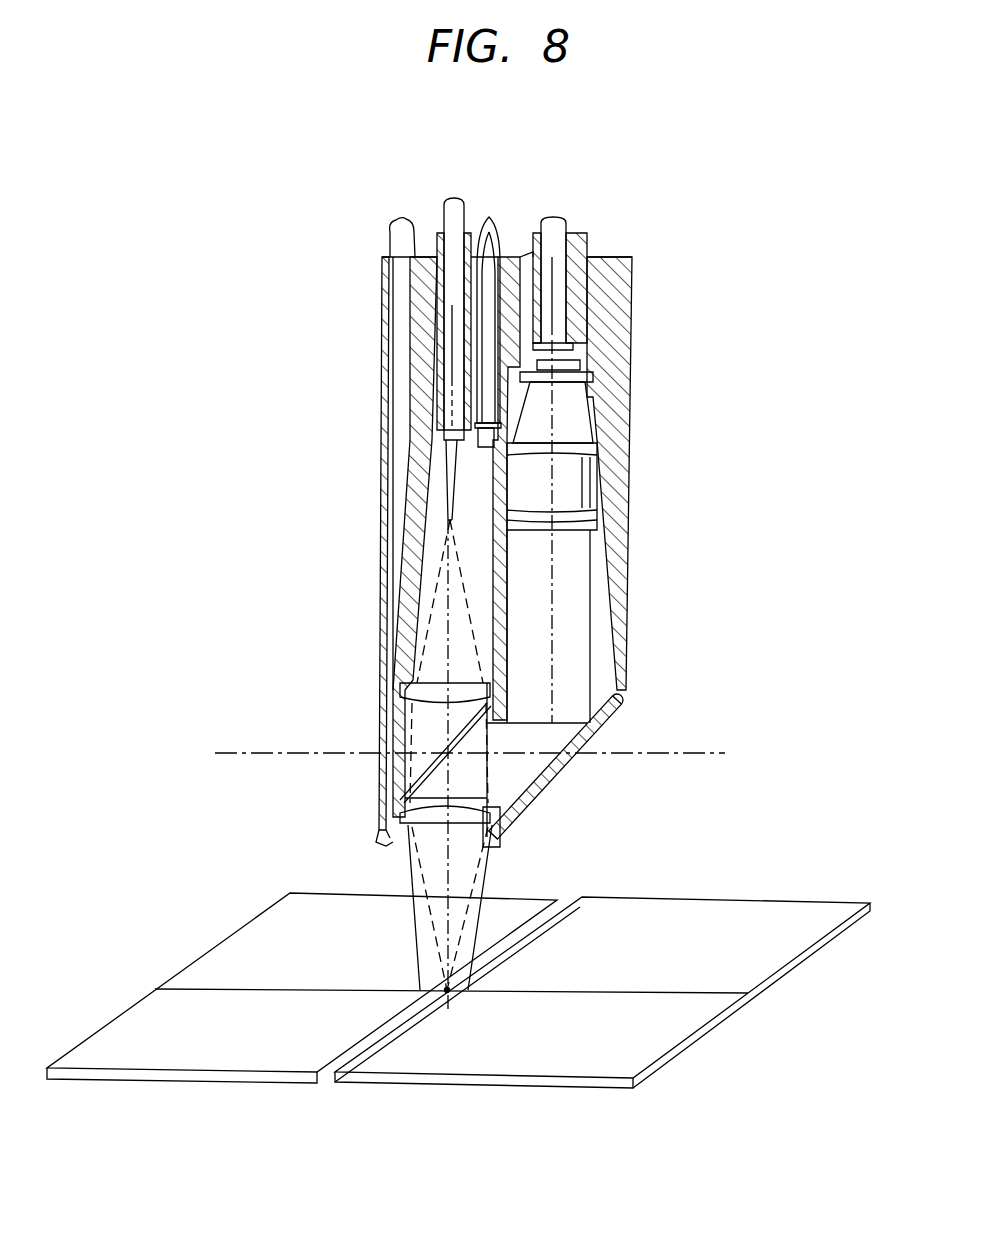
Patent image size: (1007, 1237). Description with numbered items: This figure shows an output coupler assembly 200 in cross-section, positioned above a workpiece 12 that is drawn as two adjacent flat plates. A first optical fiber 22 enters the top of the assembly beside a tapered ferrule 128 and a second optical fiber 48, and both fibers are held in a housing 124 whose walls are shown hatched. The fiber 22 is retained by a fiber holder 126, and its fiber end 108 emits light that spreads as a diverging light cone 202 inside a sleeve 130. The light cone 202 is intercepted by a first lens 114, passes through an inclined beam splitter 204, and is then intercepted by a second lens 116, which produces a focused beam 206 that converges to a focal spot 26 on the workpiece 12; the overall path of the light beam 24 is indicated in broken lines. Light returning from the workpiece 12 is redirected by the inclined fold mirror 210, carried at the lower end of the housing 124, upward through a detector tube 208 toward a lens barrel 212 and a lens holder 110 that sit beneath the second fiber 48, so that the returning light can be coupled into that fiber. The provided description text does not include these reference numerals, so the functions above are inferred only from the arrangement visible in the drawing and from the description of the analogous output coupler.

The scanning head assembly 200 is at (703, 173).
The target surface / workpiece plates 12 is at (716, 917).
The optical fiber 22 is at (447, 217).
The light beam 24 is at (474, 889).
The focal spot 26 is at (450, 992).
The second optical fiber 48 is at (562, 227).
The fiber end 108 is at (445, 528).
The lens holder 110 is at (603, 398).
The collimating lens 114 is at (400, 694).
The focusing lens 116 is at (412, 857).
The housing 124 is at (634, 346).
The fiber holder 126 is at (477, 440).
The needle / ferrule 128 is at (489, 222).
The sleeve 130 is at (386, 279).
The light cone 202 is at (442, 640).
The beam splitter 204 is at (403, 770).
The focused beam 206 is at (436, 912).
The detector tube 208 is at (550, 607).
The fold mirror 210 is at (618, 693).
The lens barrel 212 is at (582, 482).